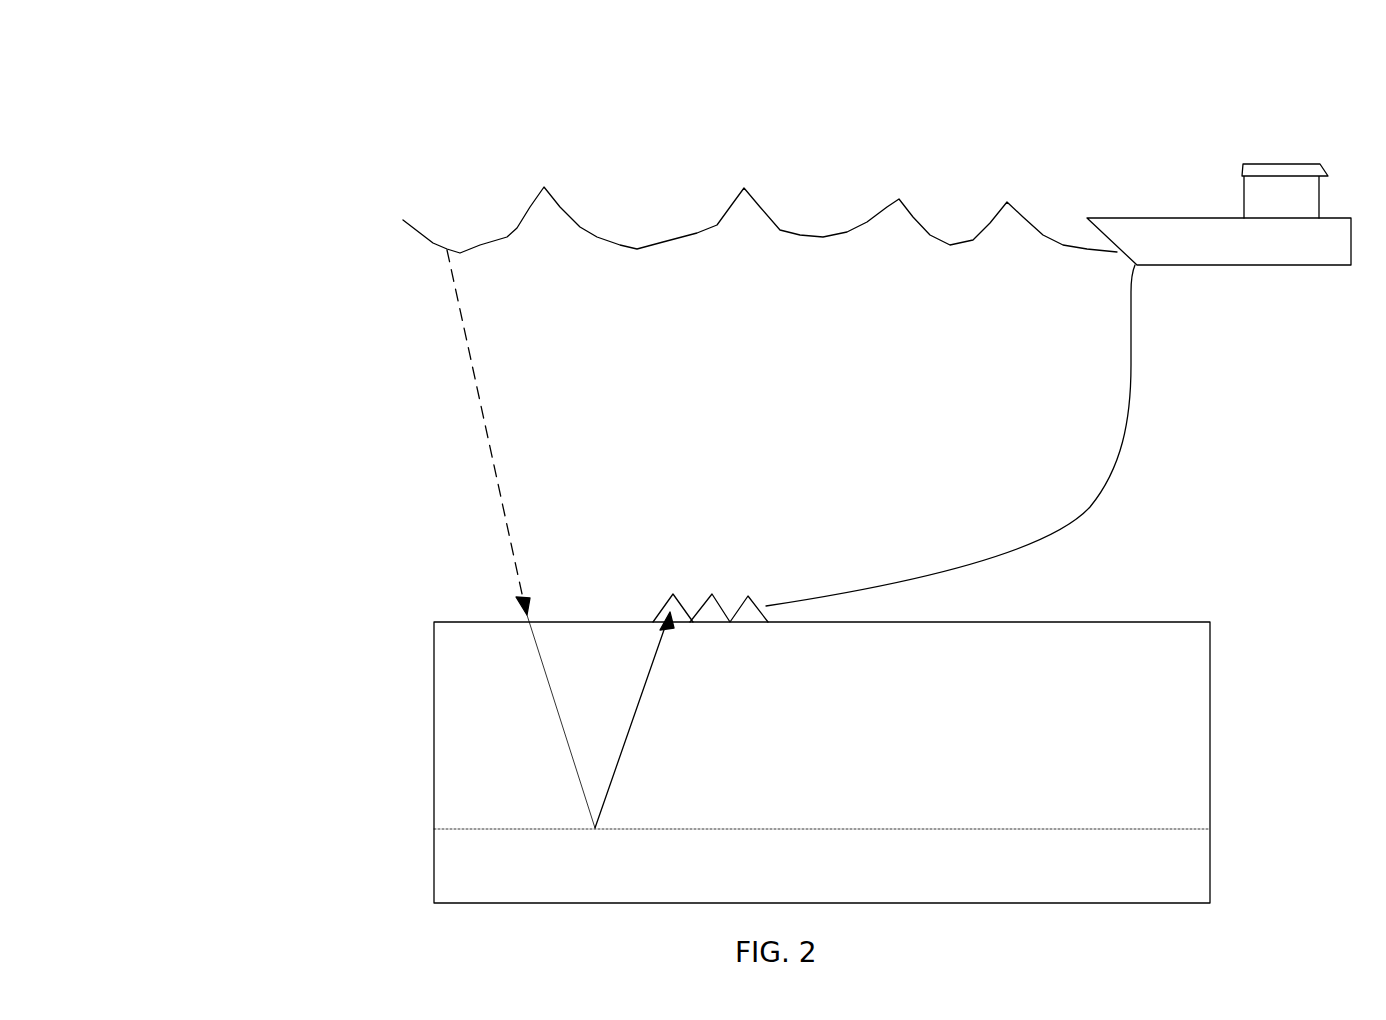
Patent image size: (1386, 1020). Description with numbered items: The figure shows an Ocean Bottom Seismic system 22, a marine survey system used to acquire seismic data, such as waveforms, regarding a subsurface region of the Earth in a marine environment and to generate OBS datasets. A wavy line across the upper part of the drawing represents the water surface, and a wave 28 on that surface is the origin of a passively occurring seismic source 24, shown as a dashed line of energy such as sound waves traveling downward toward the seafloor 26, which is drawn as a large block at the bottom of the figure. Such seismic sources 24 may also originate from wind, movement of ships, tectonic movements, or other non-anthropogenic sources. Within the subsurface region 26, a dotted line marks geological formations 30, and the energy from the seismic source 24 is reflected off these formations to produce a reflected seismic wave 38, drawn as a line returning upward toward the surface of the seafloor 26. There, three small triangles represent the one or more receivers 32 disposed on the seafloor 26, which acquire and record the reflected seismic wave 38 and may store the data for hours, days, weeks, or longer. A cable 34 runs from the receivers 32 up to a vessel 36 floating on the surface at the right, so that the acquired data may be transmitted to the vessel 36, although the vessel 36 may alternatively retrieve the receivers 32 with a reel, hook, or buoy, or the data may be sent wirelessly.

The Ocean Bottom Seismic (OBS) system 22 is at (292, 176).
The seismic source 24 is at (480, 390).
The seafloor 26 is at (434, 627).
The wave 28 is at (517, 228).
The geological formations 30 is at (530, 830).
The receivers 32 is at (668, 598).
The cable 34 is at (1131, 363).
The vessel 36 is at (1163, 217).
The reflected seismic wave 38 is at (651, 669).